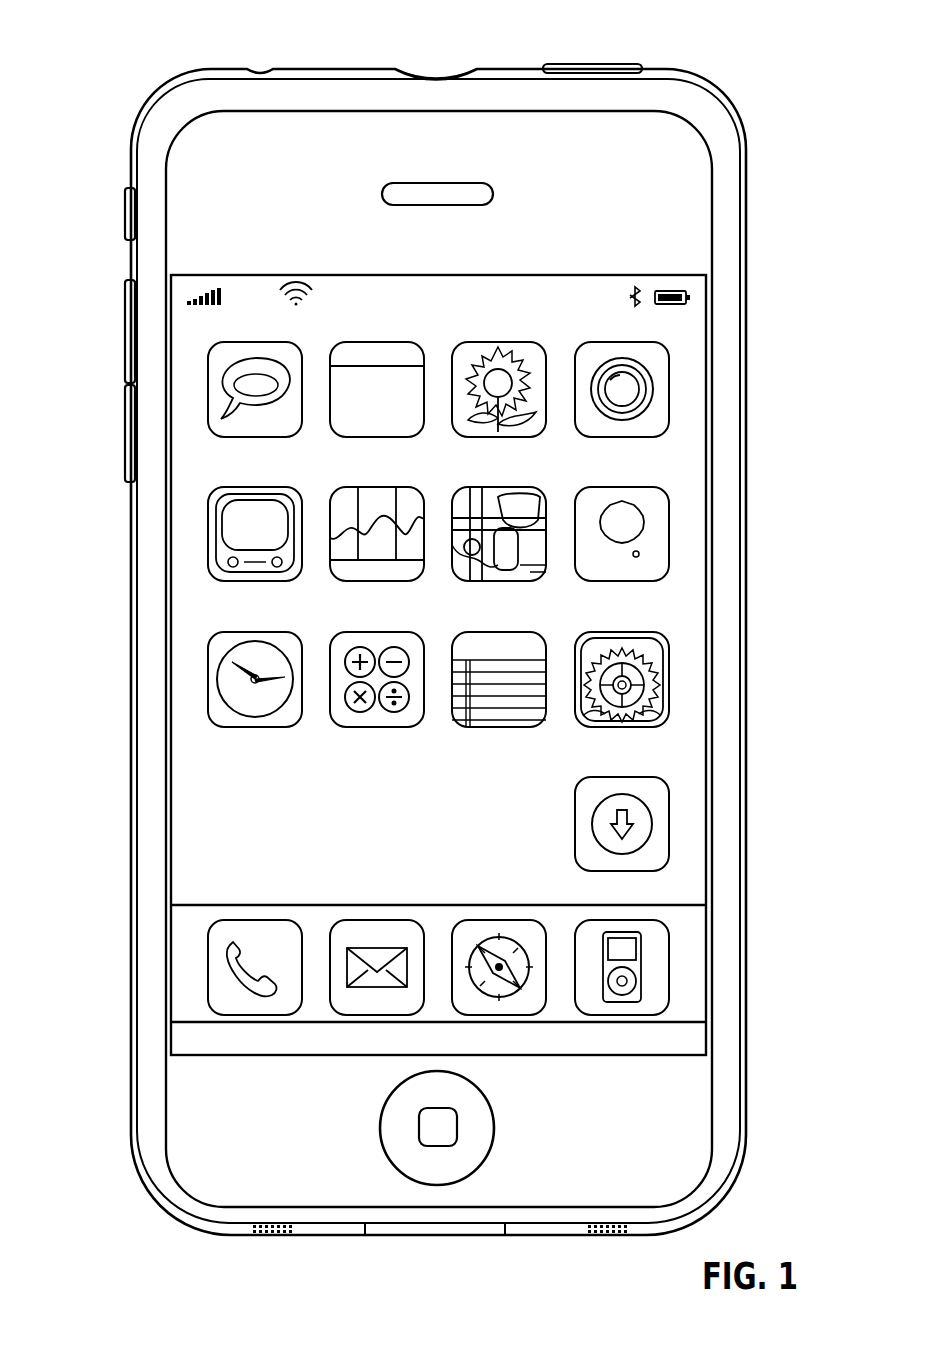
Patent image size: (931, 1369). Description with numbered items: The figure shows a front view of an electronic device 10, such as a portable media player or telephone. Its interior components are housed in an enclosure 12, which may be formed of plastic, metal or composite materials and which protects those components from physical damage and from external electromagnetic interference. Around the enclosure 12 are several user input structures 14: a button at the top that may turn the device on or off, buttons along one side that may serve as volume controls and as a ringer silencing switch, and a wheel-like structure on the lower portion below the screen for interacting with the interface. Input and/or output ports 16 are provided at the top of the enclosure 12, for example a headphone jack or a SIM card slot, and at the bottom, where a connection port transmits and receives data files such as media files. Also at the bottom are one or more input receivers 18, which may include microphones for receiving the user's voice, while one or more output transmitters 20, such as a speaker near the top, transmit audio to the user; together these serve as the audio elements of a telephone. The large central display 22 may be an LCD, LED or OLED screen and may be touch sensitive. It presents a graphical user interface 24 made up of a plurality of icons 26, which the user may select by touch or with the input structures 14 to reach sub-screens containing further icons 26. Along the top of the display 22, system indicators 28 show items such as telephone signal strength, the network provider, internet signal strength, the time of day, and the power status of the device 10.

The electronic device 10 is at (226, 24).
The enclosure 12 is at (746, 254).
The user input structures 14 is at (630, 66).
The input and/or output ports 16 is at (266, 68).
The input receivers 18 is at (265, 1249).
The output transmitters 20 is at (470, 182).
The display 22 is at (712, 640).
The graphical user interface 24 is at (693, 427).
The icons 26 is at (575, 840).
The system indicators 28 is at (248, 279).